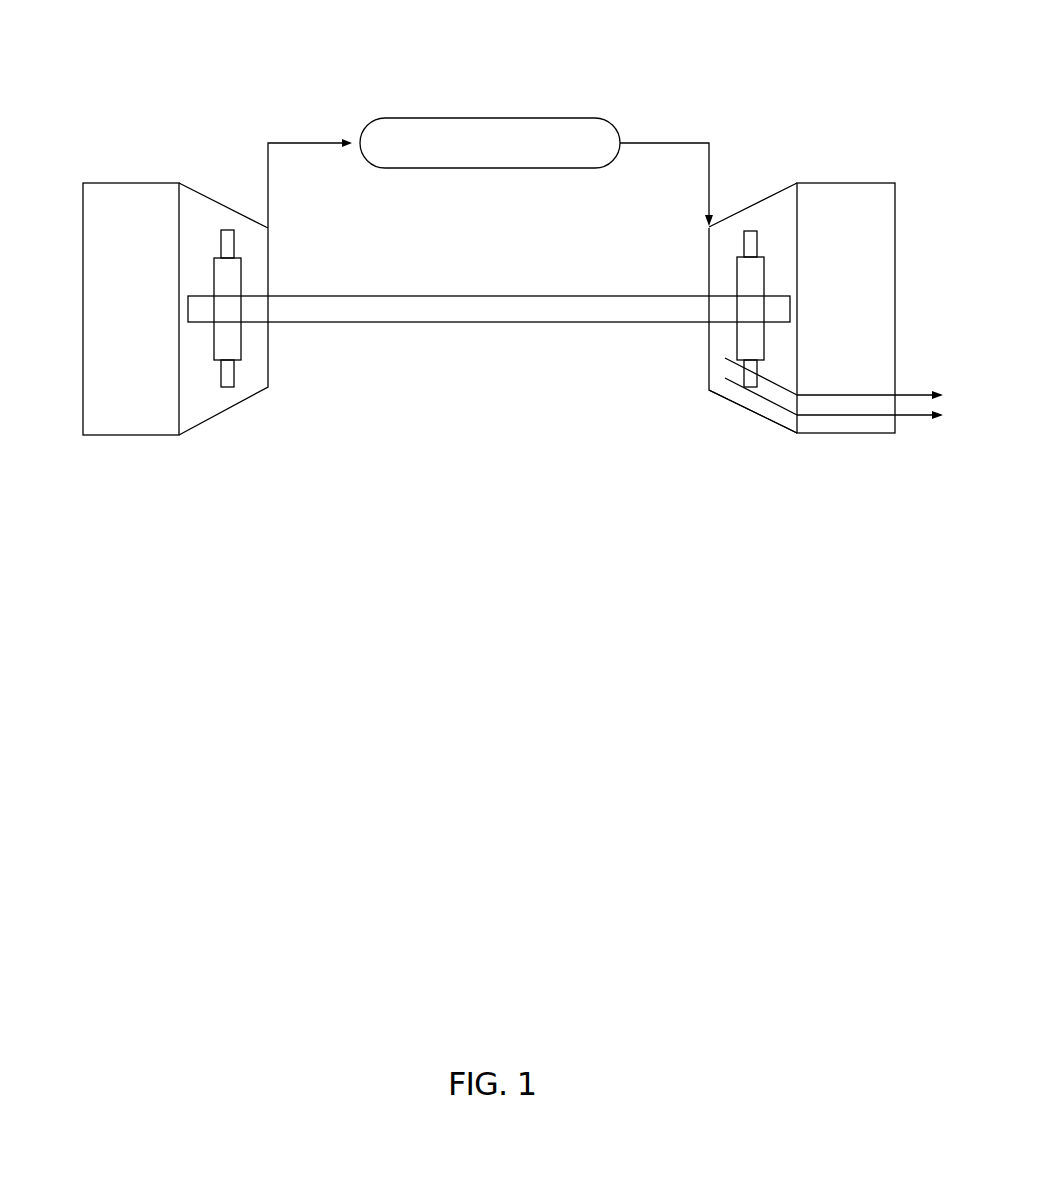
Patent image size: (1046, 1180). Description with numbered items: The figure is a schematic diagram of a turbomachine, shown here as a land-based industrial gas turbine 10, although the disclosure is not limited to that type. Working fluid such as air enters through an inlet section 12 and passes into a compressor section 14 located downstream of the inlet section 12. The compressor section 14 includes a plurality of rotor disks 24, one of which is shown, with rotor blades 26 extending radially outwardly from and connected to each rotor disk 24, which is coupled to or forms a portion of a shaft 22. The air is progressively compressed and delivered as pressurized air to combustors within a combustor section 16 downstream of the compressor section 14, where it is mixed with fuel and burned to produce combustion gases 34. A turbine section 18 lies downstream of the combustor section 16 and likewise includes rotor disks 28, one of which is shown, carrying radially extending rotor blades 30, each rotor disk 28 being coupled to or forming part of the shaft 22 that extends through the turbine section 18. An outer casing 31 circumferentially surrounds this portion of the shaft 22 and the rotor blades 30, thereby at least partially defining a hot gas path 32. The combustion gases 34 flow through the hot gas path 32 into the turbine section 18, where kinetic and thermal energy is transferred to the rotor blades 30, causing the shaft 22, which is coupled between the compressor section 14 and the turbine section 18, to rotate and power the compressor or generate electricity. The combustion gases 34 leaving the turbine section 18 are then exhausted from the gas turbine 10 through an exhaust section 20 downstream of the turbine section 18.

The gas turbine 10 is at (300, 60).
The inlet section 12 is at (122, 183).
The compressor section 14 is at (205, 193).
The combustor section 16 is at (558, 118).
The turbine section 18 is at (780, 191).
The exhaust section 20 is at (858, 183).
The shaft 22 is at (488, 322).
The rotor disk 24 is at (214, 277).
The rotor blade 26 is at (220, 243).
The rotor disk 28 is at (737, 275).
The rotor blade 30 is at (750, 231).
The outer casing 31 is at (788, 430).
The hot gas path 32 is at (745, 417).
The combustion gases 34 is at (660, 167).